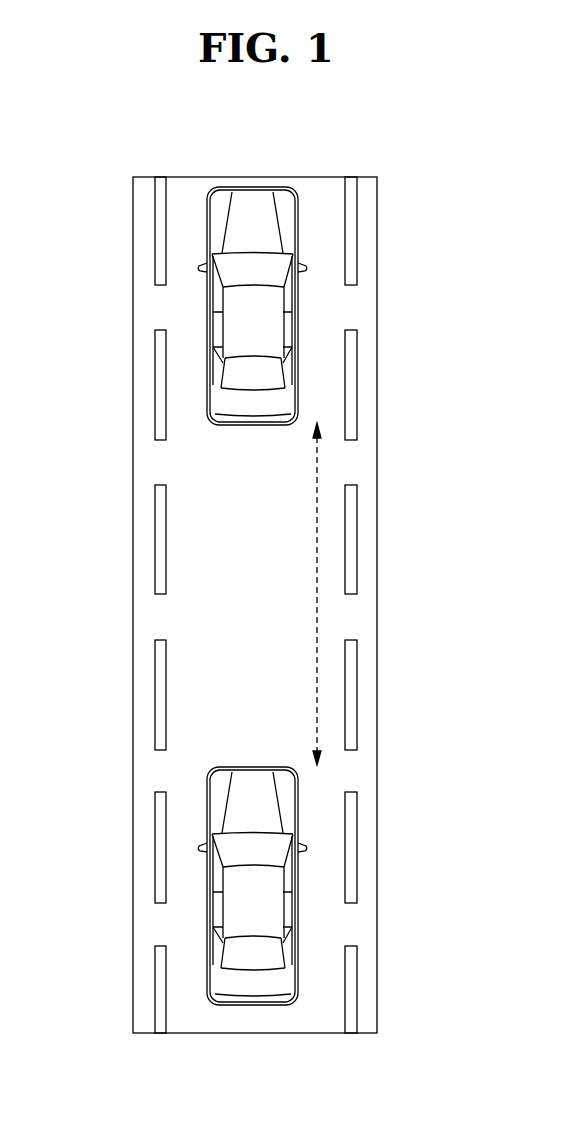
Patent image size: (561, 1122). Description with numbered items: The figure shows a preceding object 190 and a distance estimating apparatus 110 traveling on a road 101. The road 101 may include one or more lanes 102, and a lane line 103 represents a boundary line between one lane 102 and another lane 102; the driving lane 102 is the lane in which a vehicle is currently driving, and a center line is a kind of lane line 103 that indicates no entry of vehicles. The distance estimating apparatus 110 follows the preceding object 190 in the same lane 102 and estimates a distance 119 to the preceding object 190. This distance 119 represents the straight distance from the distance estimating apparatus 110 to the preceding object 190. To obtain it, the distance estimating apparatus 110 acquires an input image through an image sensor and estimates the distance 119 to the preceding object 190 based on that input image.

The road 101 is at (365, 181).
The lane 102 is at (320, 1017).
The lane line 103 is at (358, 846).
The distance estimating apparatus 110 is at (207, 905).
The distance 119 is at (317, 603).
The preceding object 190 is at (207, 325).